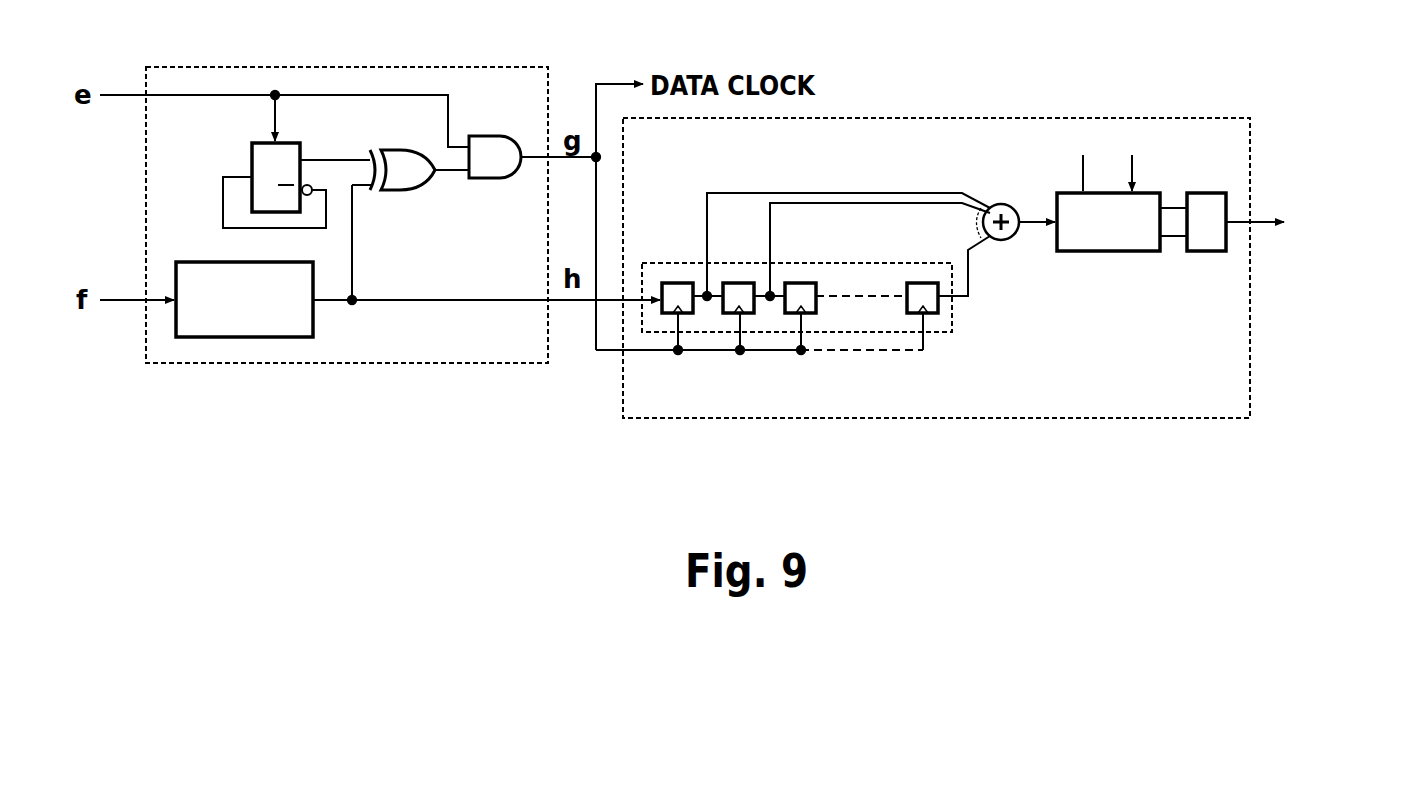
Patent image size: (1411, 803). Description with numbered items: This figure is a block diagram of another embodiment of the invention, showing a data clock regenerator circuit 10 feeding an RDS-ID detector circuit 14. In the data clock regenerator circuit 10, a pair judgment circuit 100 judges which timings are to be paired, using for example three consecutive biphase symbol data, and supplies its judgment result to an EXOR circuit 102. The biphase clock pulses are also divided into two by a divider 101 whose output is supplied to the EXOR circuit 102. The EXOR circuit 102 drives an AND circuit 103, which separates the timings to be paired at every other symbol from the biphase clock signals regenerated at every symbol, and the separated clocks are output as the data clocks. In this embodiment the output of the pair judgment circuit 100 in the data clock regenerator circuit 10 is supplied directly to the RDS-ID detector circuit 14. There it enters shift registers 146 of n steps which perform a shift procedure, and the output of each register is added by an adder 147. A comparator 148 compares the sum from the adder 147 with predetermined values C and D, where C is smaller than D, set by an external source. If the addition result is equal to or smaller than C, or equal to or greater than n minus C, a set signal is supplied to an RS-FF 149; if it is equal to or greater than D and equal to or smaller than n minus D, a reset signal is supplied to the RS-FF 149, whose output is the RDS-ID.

The data clock regenerator circuit 10 is at (487, 62).
The RDS-ID detector circuit 14 is at (1173, 118).
The pair judgment circuit 100 is at (234, 338).
The divider 101 is at (293, 143).
The EXOR circuit 102 is at (402, 190).
The AND circuit 103 is at (478, 147).
The shift registers 146 is at (713, 333).
The adder 147 is at (1000, 204).
The comparator 148 is at (1107, 252).
The RS-FF 149 is at (1205, 252).